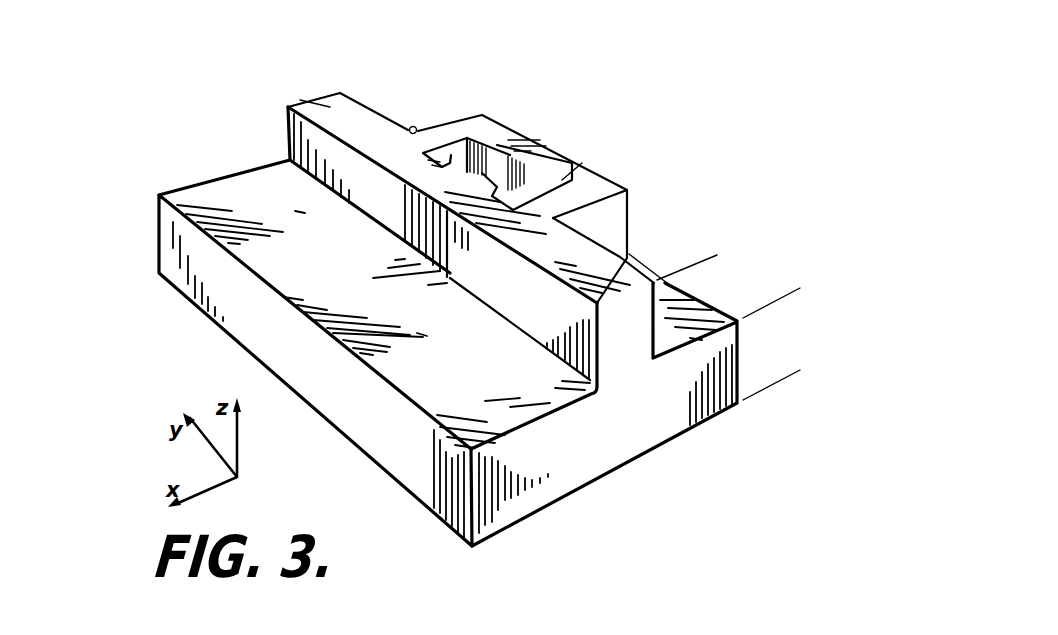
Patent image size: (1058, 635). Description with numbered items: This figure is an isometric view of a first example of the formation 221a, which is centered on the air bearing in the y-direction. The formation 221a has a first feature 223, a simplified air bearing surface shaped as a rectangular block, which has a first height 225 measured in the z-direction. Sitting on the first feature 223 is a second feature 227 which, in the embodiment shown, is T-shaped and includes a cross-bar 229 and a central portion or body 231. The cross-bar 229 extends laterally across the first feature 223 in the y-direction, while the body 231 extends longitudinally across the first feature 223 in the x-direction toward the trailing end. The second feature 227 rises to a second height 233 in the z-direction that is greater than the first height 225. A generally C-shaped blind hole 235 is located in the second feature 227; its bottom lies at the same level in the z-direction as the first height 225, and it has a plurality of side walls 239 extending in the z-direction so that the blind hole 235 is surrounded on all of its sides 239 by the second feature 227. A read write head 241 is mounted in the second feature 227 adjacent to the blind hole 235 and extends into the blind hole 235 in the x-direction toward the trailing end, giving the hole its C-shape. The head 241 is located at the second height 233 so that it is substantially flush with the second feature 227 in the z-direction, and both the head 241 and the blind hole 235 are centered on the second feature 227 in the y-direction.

The formation 221a is at (257, 145).
The first feature 223 is at (578, 473).
The first height 225 is at (767, 432).
The second feature 227 is at (367, 120).
The cross-bar 229 is at (317, 99).
The body 231 is at (606, 180).
The second height 233 is at (693, 393).
The blind hole 235 is at (515, 190).
The side walls 239 is at (525, 187).
The read write head 241 is at (465, 182).